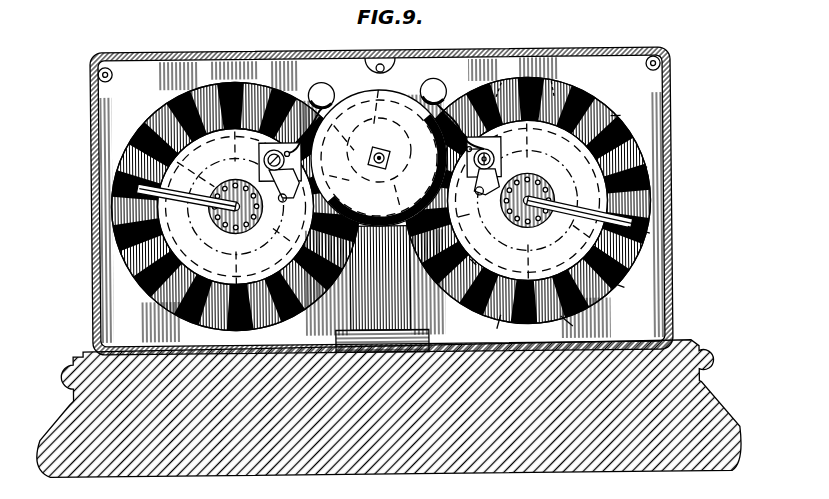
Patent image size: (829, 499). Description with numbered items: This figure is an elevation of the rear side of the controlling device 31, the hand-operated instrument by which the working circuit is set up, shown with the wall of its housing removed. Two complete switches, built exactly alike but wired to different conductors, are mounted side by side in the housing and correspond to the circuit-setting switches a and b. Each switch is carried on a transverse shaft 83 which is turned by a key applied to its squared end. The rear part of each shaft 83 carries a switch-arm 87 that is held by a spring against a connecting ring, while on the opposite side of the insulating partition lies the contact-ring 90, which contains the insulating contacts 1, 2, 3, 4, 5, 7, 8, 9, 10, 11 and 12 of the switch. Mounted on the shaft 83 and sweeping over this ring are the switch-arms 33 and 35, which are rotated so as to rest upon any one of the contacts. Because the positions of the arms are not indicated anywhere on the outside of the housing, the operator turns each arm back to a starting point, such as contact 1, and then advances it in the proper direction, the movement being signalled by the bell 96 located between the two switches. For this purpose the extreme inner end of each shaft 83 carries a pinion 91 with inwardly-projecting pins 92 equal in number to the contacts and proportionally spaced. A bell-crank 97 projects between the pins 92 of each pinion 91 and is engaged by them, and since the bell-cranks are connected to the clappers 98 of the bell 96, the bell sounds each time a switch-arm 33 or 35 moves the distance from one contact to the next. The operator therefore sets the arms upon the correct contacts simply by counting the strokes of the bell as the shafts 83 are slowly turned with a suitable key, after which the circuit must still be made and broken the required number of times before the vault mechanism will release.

The insulating contact 1 is at (649, 169).
The insulating contact 2 is at (645, 235).
The insulating contact 3 is at (620, 290).
The insulating contact 4 is at (570, 329).
The insulating contact 5 is at (495, 330).
The insulating contact 7 is at (458, 219).
The insulating contact 8 is at (479, 259).
The insulating contact 9 is at (456, 108).
The insulating contact 10 is at (508, 80).
The insulating contact 11 is at (557, 77).
The insulating contact 12 is at (627, 115).
The controlling device 31 is at (387, 296).
The switch-arm 33 is at (186, 207).
The switch-arm 35 is at (556, 226).
The shaft 83 is at (236, 200).
The switch-arm 87 is at (545, 146).
The contact-ring 90 is at (381, 196).
The pinion 91 is at (520, 184).
The pins 92 is at (536, 186).
The bell 96 is at (379, 205).
The bell-crank 97 is at (483, 202).
The clapper 98 is at (437, 86).
The circuit-setting switch a is at (644, 67).
The circuit-setting switch b is at (112, 82).